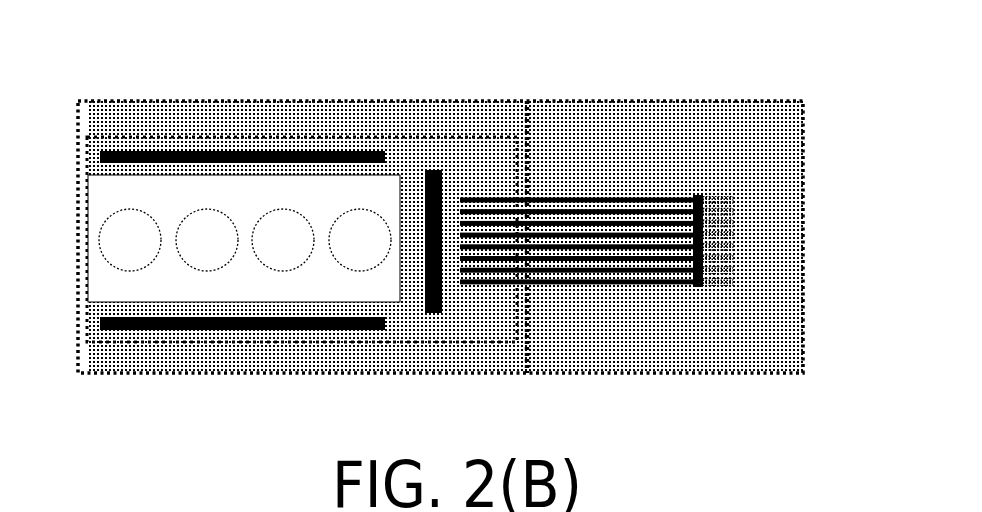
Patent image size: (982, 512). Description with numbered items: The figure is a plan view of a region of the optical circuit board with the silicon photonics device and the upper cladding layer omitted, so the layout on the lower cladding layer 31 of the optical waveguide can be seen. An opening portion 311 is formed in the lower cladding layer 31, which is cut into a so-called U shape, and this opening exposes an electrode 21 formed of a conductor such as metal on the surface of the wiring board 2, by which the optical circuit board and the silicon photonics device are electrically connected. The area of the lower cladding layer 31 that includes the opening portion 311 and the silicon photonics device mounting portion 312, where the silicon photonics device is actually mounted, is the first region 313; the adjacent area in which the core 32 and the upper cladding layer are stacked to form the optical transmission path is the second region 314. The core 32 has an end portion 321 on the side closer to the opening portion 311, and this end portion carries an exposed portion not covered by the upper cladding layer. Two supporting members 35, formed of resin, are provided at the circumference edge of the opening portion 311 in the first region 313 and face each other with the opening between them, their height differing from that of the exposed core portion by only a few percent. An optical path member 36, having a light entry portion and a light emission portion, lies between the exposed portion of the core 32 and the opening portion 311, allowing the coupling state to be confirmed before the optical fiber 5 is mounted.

The wiring board 2 is at (120, 200).
The electrode 21 is at (125, 238).
The lower cladding layer 31 is at (775, 128).
The opening portion 311 is at (398, 173).
The silicon photonics device mounting portion 312 is at (457, 137).
The first region 313 is at (190, 101).
The second region 314 is at (680, 101).
The core 32 is at (580, 195).
The end portion 321 is at (466, 298).
The supporting member 35 is at (228, 152).
The optical path member 36 is at (443, 313).
The optical fiber 5 is at (730, 222).